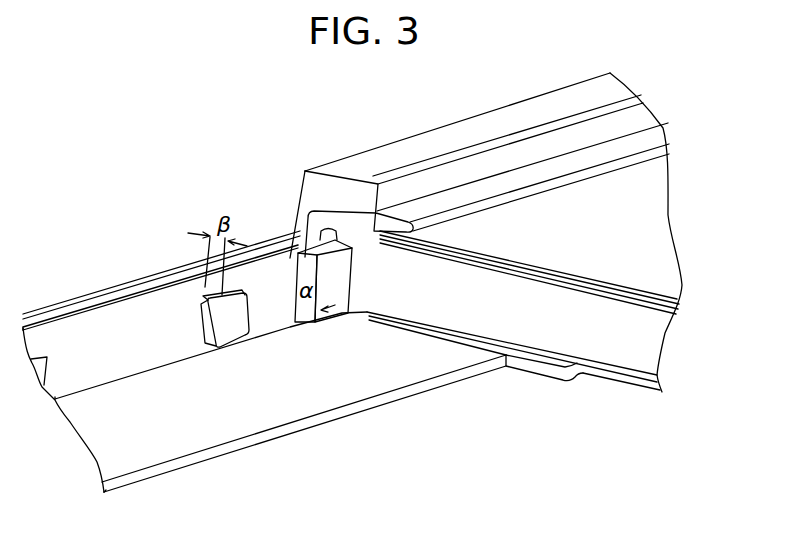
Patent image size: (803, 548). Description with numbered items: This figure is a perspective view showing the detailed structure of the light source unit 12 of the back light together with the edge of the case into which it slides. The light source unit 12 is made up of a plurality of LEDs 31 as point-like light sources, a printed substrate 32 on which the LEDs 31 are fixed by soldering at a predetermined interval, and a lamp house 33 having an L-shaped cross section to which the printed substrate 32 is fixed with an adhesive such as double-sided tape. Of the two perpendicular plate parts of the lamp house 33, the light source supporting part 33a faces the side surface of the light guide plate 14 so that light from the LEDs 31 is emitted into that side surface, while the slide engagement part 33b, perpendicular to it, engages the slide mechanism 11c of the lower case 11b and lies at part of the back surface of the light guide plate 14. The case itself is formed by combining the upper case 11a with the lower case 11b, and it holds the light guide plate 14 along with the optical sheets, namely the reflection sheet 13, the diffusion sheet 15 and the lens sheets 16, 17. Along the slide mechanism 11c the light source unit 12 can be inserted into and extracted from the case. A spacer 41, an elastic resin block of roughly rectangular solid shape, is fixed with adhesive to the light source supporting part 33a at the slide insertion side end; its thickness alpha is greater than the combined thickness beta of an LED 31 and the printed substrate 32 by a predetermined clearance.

The upper case 11a is at (468, 130).
The lower case 11b is at (622, 380).
The slide mechanism 11c is at (530, 385).
The light source unit 12 is at (374, 421).
The reflection sheet 13 is at (660, 378).
The light guide plate 14 is at (650, 338).
The diffusion sheet 15 is at (679, 312).
The lens sheet 16 is at (680, 304).
The lens sheet 17 is at (677, 298).
The LED 31 is at (228, 318).
The printed substrate 32 is at (88, 338).
The lamp house 33 is at (268, 449).
The light source supporting part 33a is at (127, 290).
The slide engagement part 33b is at (133, 448).
The spacer 41 is at (312, 262).